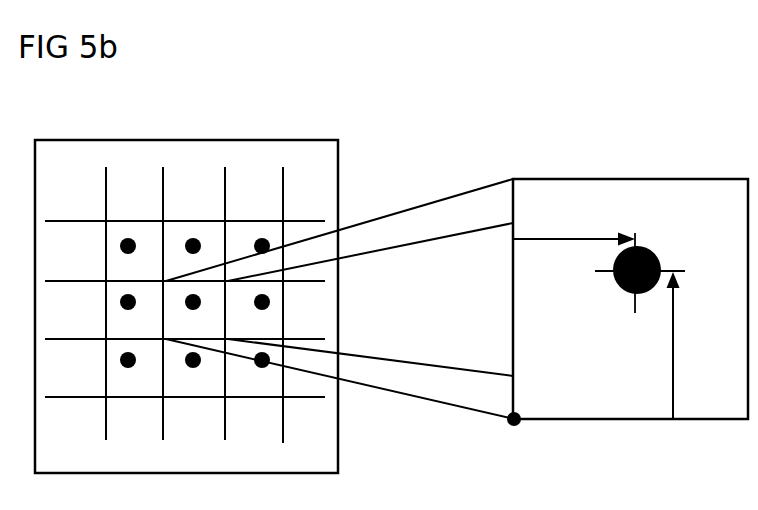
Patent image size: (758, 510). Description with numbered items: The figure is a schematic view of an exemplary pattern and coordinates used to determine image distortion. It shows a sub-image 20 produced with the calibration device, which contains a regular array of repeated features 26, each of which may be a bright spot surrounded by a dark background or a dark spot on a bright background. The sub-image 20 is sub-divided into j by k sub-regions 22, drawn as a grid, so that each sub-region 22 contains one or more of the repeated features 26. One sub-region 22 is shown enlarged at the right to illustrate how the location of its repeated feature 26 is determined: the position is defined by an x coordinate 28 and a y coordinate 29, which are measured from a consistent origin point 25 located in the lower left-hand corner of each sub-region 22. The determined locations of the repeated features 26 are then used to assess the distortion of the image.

The sub-image 20 is at (186, 289).
The sub-region 22 is at (396, 294).
The origin point 25 is at (537, 436).
The repeated feature 26 is at (648, 267).
The x coordinate 28 is at (574, 235).
The y coordinate 29 is at (659, 345).